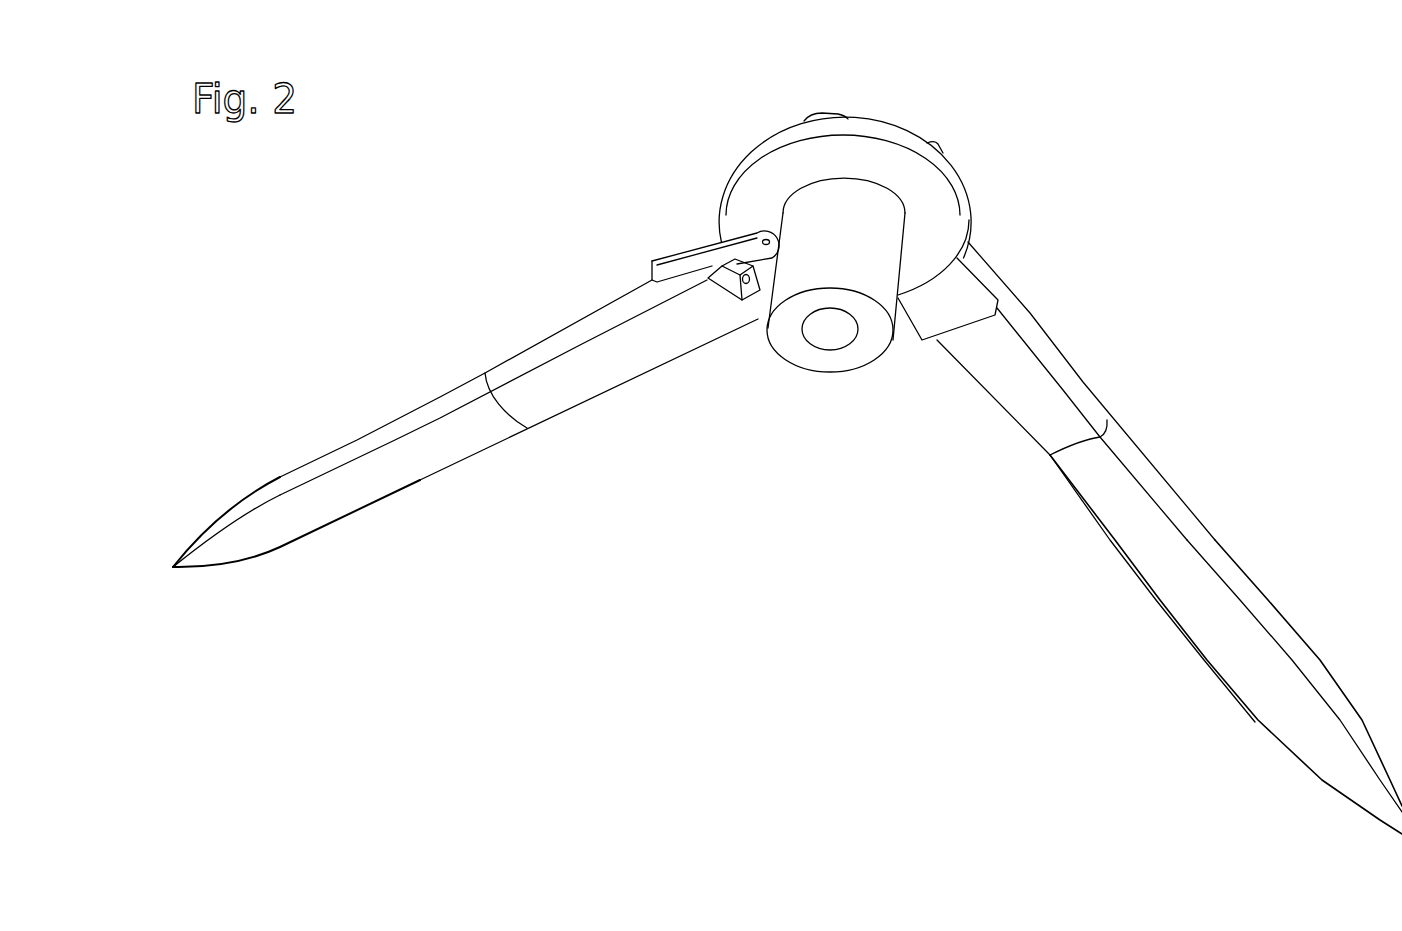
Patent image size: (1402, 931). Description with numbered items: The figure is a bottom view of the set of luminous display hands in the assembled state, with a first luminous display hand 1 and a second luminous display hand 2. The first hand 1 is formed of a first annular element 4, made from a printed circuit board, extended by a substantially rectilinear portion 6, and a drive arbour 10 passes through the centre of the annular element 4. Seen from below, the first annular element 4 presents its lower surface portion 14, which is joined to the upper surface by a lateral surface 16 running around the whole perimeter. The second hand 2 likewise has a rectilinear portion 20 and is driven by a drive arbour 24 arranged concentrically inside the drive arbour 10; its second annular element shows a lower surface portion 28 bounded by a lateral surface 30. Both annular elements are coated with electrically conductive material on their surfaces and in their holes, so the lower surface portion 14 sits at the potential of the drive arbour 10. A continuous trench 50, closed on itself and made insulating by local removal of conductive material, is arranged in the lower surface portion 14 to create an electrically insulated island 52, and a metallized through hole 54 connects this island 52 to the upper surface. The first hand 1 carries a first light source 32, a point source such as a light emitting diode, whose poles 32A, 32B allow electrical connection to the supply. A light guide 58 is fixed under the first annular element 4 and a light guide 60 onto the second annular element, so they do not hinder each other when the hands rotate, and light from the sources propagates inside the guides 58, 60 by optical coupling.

The first luminous display hand 1 is at (333, 322).
The second luminous display hand 2 is at (1113, 642).
The first annular element 4 is at (992, 247).
The portion 6 is at (521, 452).
The drive arbour 10 is at (878, 277).
The lower surface portion 14 is at (928, 212).
The lateral surface 16 is at (852, 130).
The portion 20 is at (1137, 413).
The drive arbour 24 is at (822, 338).
The lower surface portion 28 is at (955, 310).
The lateral surface 30 is at (917, 139).
The first light source 32 is at (727, 300).
The first pole 32A is at (760, 300).
The second pole 32B is at (720, 258).
The continuous trench 50 is at (723, 233).
The island 52 is at (703, 266).
The metallized through hole 54 is at (767, 238).
The light guide 58 is at (462, 398).
The light guide 60 is at (1197, 537).